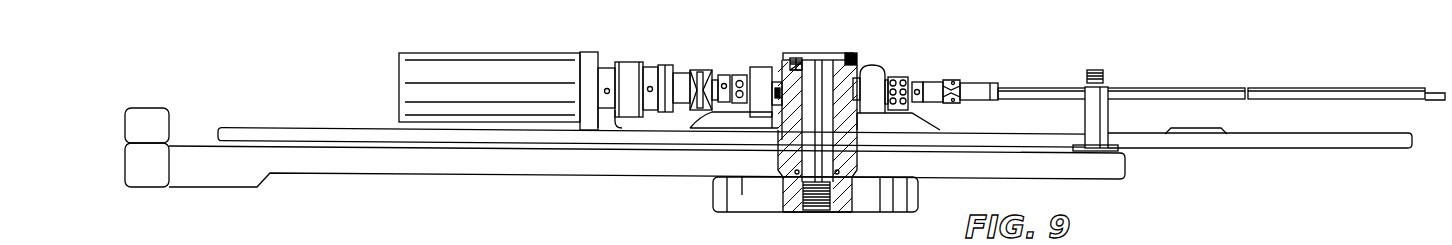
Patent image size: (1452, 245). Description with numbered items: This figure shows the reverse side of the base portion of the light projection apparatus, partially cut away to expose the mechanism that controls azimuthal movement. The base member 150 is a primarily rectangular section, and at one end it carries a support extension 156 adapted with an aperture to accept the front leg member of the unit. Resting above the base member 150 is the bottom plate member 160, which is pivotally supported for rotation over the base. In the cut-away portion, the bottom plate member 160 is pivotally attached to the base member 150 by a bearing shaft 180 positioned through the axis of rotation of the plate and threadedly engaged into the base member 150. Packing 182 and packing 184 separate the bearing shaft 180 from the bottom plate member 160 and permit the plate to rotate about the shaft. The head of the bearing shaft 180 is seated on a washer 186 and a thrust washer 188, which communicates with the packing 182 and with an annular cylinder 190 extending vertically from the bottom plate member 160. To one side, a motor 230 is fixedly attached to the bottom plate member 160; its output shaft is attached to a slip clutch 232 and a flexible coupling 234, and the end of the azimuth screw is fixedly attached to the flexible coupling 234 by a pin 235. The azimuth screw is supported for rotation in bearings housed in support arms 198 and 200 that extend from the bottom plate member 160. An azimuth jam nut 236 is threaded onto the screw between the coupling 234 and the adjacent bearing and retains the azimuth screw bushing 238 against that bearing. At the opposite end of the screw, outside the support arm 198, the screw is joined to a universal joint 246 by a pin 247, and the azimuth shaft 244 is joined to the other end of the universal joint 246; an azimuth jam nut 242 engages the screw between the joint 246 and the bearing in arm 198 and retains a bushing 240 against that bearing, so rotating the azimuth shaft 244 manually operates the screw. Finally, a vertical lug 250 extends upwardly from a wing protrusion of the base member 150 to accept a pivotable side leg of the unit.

The base member 150 is at (735, 195).
The support extension 156 is at (152, 125).
The bottom plate member 160 is at (1263, 143).
The bearing shaft 180 is at (843, 55).
The packing 182 is at (862, 67).
The packing 184 is at (840, 136).
The washer 186 is at (796, 66).
The thrust washer 188 is at (797, 60).
The annular cylinder 190 is at (805, 56).
The support arm 198 is at (875, 78).
The support arm 200 is at (758, 75).
The motor 230 is at (488, 82).
The slip clutch 232 is at (628, 73).
The flexible coupling 234 is at (700, 75).
The pin 235 is at (727, 75).
The azimuth jam nut 236 is at (740, 75).
The azimuth screw bushing 238 is at (744, 100).
The bushing 240 is at (908, 110).
The azimuth jam nut 242 is at (898, 80).
The azimuth shaft 244 is at (1372, 93).
The universal joint 246 is at (978, 88).
The pin 247 is at (918, 85).
The vertical lug 250 is at (1100, 105).